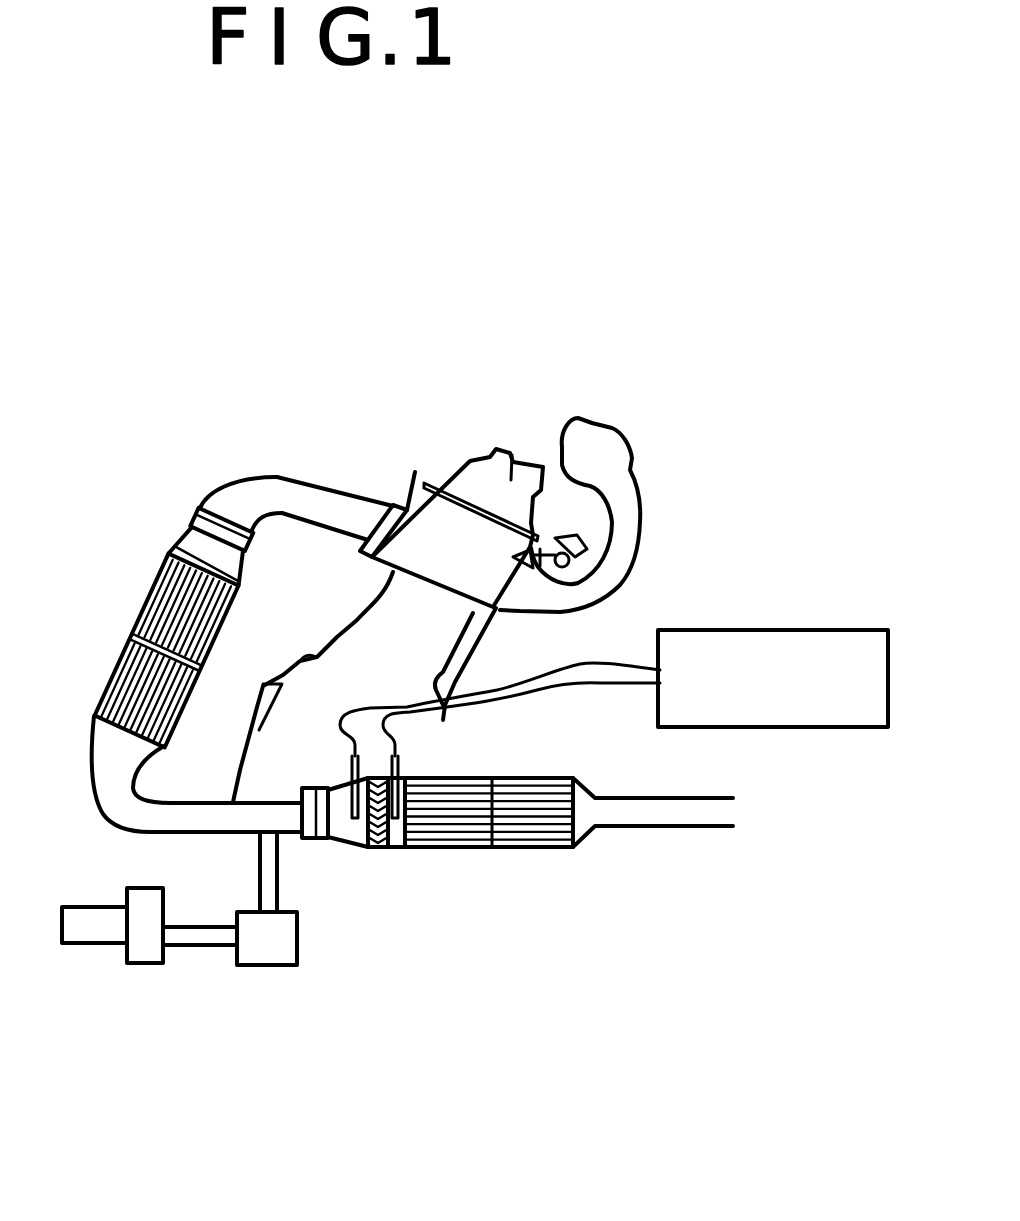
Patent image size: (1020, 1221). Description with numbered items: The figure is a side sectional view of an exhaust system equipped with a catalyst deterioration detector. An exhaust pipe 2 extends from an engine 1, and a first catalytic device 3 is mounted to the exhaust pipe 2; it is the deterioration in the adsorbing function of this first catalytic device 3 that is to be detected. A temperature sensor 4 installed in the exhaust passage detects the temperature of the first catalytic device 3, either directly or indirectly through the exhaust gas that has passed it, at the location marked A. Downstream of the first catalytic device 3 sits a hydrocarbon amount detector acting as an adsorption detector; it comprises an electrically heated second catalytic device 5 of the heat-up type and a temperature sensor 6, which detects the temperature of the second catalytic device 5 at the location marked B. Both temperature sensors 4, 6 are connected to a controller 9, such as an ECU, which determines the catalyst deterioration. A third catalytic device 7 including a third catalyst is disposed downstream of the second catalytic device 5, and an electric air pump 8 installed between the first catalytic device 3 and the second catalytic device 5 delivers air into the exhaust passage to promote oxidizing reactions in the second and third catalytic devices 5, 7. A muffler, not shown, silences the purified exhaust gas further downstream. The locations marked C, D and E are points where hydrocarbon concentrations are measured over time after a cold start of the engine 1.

The engine 1 is at (443, 640).
The exhaust pipe 2 is at (340, 500).
The first catalytic device 3 is at (120, 678).
The temperature sensor 4 is at (353, 772).
The second catalytic device 5 is at (373, 847).
The temperature sensor 6 is at (425, 777).
The third catalytic device 7 is at (537, 785).
The electric air pump 8 is at (143, 967).
The controller 9 is at (826, 630).
The temperature detection location A is at (347, 827).
The temperature detection location B is at (397, 837).
The HC concentration measurement location C is at (257, 490).
The HC concentration measurement location D is at (117, 822).
The HC concentration measurement location E is at (672, 818).